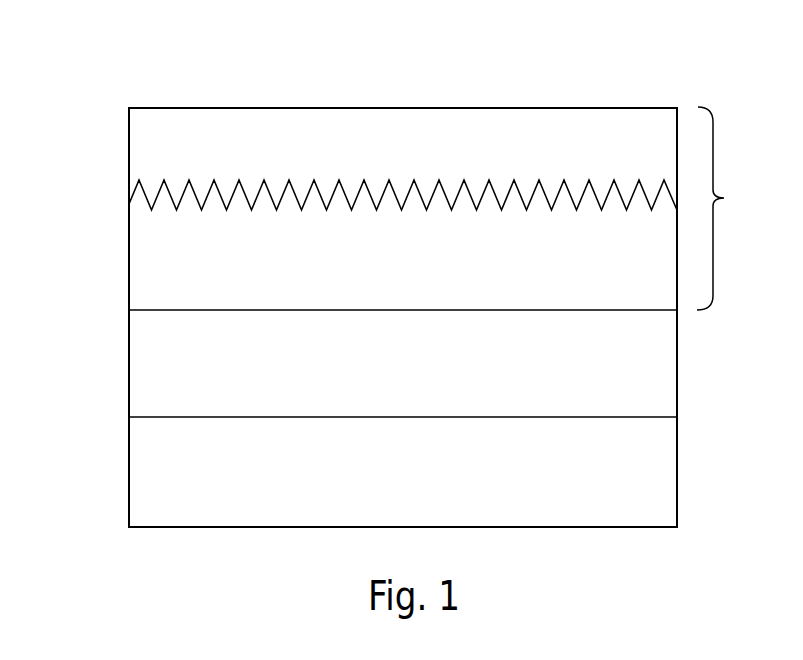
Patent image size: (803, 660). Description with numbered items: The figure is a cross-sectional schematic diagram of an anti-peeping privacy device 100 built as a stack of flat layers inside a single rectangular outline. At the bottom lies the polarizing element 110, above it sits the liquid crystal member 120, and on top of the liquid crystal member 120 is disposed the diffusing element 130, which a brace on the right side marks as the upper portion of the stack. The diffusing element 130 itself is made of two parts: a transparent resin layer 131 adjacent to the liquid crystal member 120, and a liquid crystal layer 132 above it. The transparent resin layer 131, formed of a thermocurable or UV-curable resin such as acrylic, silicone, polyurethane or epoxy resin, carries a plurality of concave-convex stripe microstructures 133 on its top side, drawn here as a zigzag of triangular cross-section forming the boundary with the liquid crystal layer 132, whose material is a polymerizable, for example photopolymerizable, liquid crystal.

The anti-peeping privacy device 100 is at (168, 65).
The polarizing element 110 is at (403, 452).
The liquid crystal member 120 is at (403, 343).
The diffusing element 130 is at (734, 208).
The transparent resin layer 131 is at (403, 260).
The liquid crystal layer 132 is at (403, 144).
The zigzag interface 133 is at (141, 199).